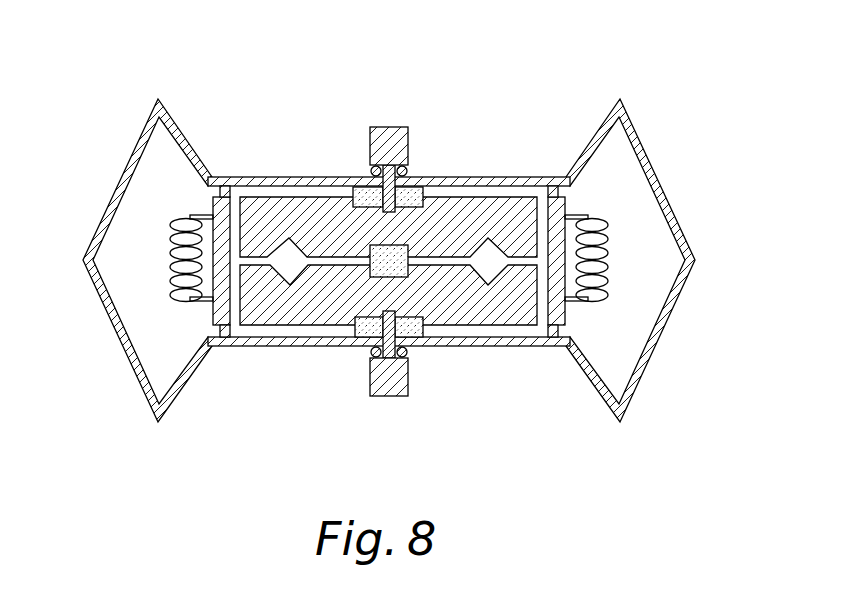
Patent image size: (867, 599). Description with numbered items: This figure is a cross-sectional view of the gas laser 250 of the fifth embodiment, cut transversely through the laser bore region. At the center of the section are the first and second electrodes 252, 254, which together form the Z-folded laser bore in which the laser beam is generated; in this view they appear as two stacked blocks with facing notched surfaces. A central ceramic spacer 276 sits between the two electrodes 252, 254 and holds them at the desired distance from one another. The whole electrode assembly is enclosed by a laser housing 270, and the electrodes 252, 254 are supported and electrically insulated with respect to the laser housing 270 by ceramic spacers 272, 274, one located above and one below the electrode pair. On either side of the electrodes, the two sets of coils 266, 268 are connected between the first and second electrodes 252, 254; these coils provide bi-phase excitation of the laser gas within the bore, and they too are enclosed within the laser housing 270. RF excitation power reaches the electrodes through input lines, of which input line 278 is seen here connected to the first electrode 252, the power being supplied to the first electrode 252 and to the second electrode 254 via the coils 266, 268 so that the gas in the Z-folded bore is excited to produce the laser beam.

The gas laser 250 is at (398, 221).
The first electrode 252 is at (522, 210).
The second electrode 254 is at (513, 307).
The set of coils 266 is at (173, 237).
The set of coils 268 is at (600, 293).
The laser housing 270 is at (662, 188).
The ceramic spacer 272 is at (415, 193).
The ceramic spacer 274 is at (355, 328).
The central ceramic spacer 276 is at (370, 250).
The input line 278 is at (370, 148).